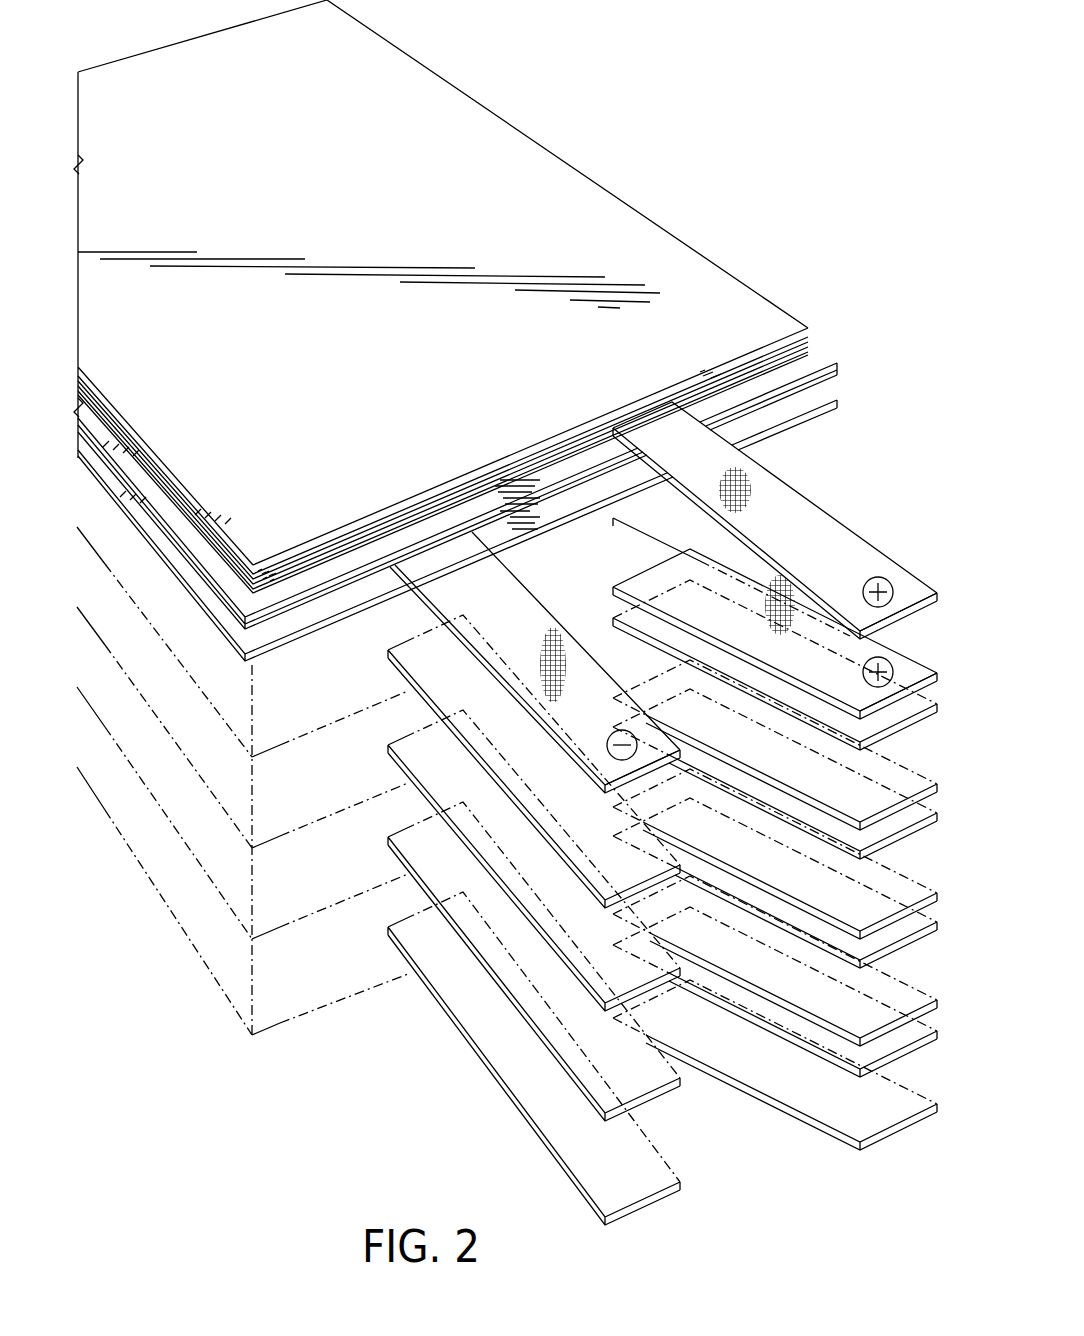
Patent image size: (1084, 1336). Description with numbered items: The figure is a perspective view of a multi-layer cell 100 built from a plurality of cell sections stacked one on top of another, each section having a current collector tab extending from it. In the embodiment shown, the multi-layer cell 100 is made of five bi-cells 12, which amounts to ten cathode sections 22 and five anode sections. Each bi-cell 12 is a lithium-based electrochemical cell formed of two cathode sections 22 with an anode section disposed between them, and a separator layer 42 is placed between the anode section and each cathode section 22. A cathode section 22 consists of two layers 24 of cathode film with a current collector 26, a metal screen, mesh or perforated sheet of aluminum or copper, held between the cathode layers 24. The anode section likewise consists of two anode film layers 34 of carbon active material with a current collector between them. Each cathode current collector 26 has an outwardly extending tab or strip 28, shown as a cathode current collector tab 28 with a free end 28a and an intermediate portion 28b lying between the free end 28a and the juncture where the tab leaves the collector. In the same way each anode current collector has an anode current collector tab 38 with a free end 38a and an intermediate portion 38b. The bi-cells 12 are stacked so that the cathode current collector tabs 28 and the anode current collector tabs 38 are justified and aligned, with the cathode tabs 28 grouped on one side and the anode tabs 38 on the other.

The multi-layer cell 100 is at (740, 106).
The bi-cell 12 is at (567, 126).
The cathode section 22 is at (656, 222).
The cathode film layer 24 is at (770, 368).
The current collector 26 is at (787, 350).
The separator layer 42 is at (823, 398).
The anode film layer 34 is at (830, 412).
The cathode current collector tab 28 is at (799, 613).
The free end 28a is at (920, 672).
The intermediate portion 28b is at (767, 485).
The anode current collector tab 38 is at (438, 609).
The free end 38a is at (603, 760).
The intermediate portion 38b is at (493, 648).